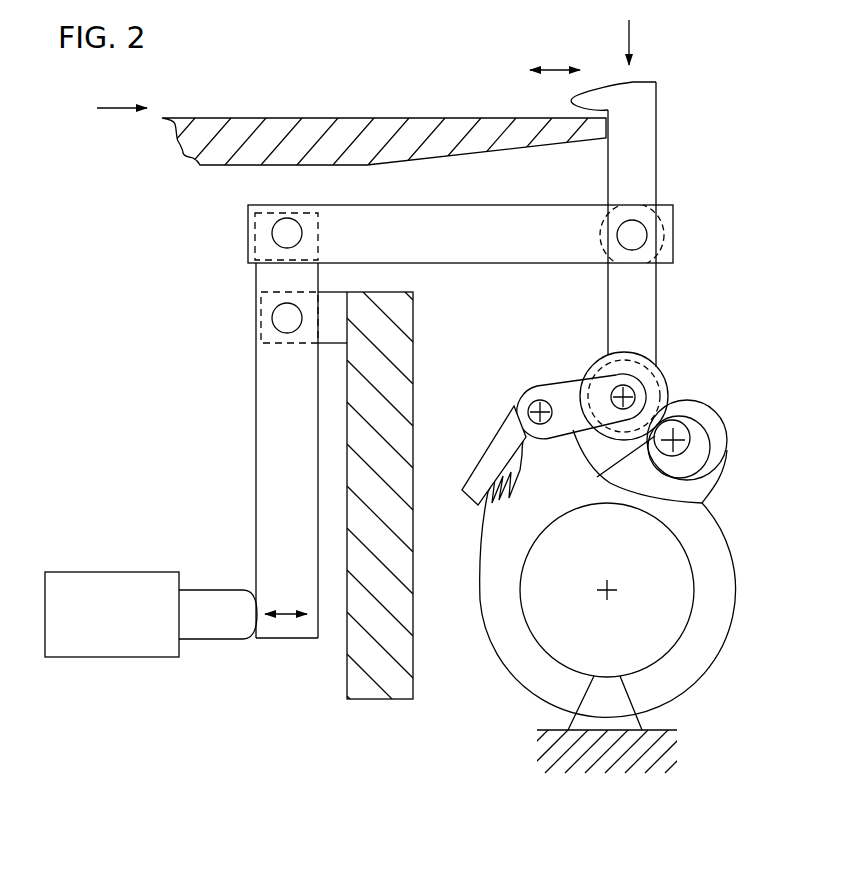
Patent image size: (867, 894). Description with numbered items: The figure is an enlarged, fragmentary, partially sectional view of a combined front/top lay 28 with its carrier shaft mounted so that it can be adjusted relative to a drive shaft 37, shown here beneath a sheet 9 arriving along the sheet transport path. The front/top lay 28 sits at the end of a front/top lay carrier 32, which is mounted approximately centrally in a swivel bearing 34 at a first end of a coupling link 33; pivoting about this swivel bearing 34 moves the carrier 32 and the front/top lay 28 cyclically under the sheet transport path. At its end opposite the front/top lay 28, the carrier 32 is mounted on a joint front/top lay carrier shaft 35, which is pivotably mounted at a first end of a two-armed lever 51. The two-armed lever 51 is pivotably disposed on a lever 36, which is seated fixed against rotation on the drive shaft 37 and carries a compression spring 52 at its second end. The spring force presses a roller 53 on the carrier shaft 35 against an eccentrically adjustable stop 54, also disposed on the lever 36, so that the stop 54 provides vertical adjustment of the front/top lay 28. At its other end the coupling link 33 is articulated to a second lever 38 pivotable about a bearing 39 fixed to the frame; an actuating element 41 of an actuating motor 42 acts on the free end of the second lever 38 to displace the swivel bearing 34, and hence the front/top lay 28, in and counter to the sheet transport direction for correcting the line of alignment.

The workpiece 9 is at (313, 124).
The front/top lay 28 is at (656, 125).
The front/top lay carrier 32 is at (639, 298).
The coupling link 33 is at (423, 207).
The swivel bearing 34 is at (632, 235).
The front/top lay carrier shaft 35 is at (640, 398).
The lever 36 is at (702, 637).
The drive shaft 37 is at (640, 623).
The second lever 38 is at (283, 411).
The bearing fixed to the frame 39 is at (287, 319).
The actuating element 41 is at (210, 622).
The actuating motor 42 is at (100, 628).
The two-armed lever 51 is at (567, 400).
The compression spring 52 is at (483, 513).
The roller 53 is at (667, 377).
The stop 54 is at (683, 432).